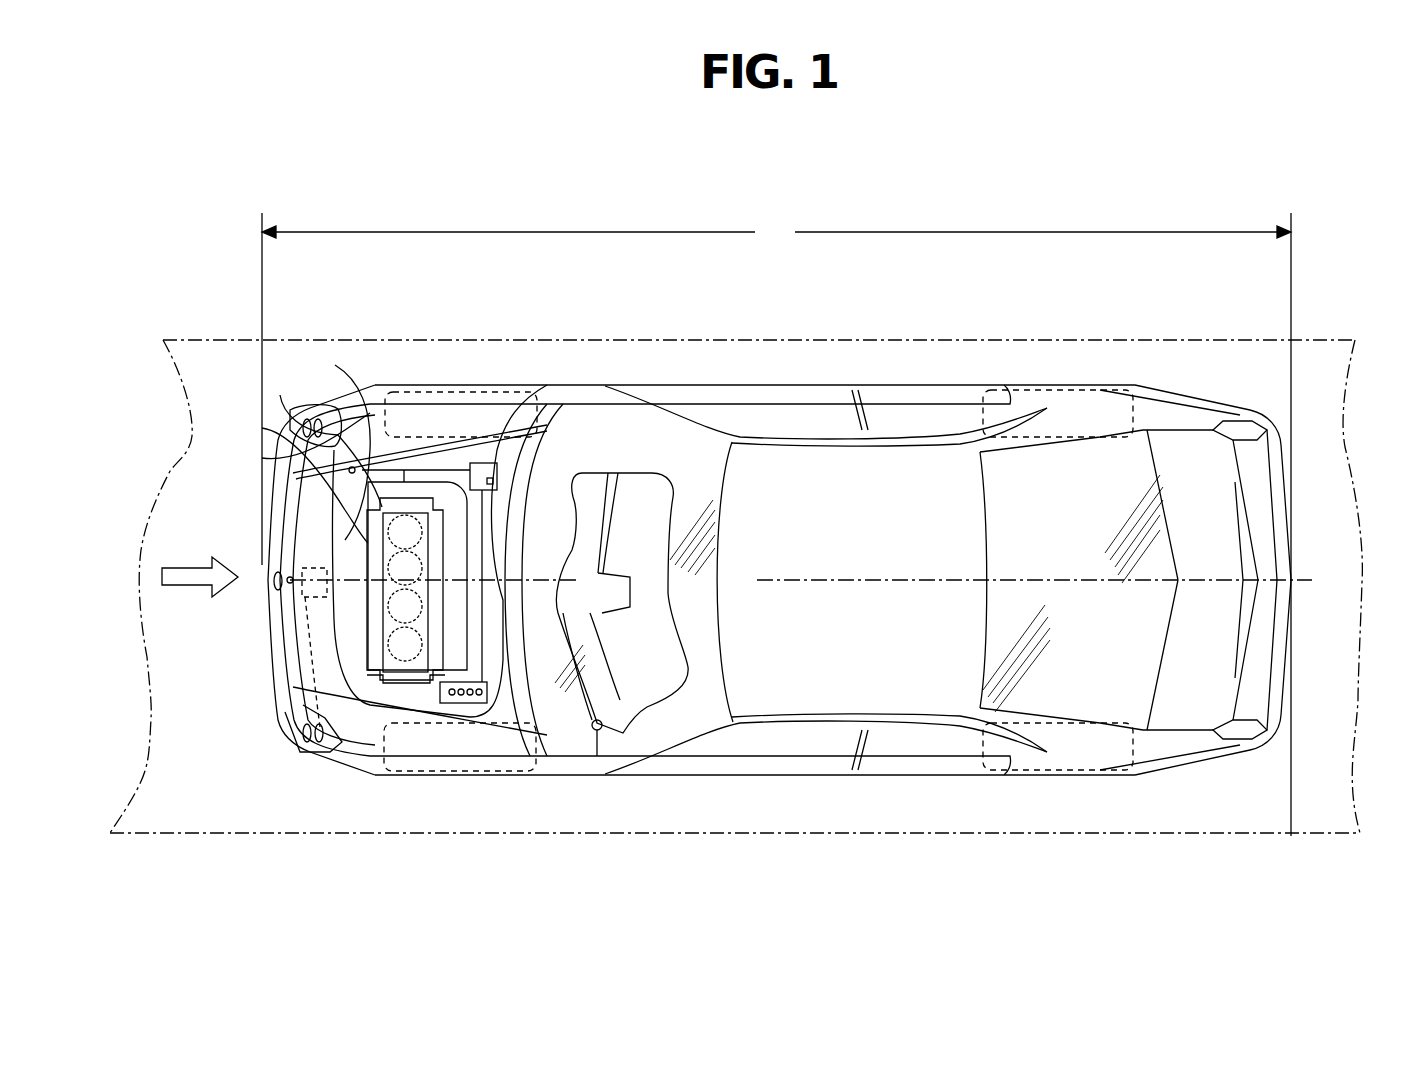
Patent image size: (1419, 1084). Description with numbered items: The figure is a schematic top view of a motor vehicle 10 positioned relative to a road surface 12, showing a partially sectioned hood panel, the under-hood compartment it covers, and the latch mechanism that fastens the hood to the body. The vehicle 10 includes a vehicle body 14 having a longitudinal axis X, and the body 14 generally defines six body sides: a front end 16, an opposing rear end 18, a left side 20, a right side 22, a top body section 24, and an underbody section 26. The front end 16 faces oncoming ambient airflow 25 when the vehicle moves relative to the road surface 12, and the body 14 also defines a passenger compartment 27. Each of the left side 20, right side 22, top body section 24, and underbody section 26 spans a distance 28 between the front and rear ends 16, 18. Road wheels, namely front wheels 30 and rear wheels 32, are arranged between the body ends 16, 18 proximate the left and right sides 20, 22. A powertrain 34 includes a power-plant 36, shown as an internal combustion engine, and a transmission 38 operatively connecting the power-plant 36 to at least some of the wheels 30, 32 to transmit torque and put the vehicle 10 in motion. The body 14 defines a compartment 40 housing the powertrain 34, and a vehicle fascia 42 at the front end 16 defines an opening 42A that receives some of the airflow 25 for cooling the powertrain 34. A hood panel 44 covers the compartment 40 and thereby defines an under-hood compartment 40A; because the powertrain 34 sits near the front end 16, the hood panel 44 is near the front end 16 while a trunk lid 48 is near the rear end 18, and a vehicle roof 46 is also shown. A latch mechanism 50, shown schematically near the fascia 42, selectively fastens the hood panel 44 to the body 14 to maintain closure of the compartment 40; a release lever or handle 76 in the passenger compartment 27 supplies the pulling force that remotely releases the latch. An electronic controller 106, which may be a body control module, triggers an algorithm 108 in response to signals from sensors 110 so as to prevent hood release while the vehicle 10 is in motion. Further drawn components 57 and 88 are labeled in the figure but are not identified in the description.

The motor vehicle 10 is at (238, 861).
The road surface 12 is at (220, 340).
The vehicle body 14 is at (900, 480).
The front end 16 is at (268, 522).
The rear end 18 is at (1291, 535).
The left side 20 is at (770, 777).
The right side 22 is at (708, 388).
The top body section 24 is at (852, 582).
The ambient airflow 25 is at (200, 568).
The underbody section 26 is at (918, 392).
The passenger compartment 27 is at (628, 648).
The distance 28 is at (776, 524).
The front wheels 30 is at (467, 390).
The rear wheels 32 is at (1133, 407).
The powertrain 34 is at (365, 630).
The power-plant 36 is at (296, 442).
The transmission 38 is at (299, 480).
The compartment 40 is at (403, 697).
The under-hood compartment 40A is at (380, 745).
The vehicle fascia 42 is at (277, 625).
The opening 42A is at (277, 597).
The hood panel 44 is at (298, 738).
The vehicle roof 46 is at (958, 558).
The trunk lid 48 is at (1193, 466).
The latch mechanism 50 is at (290, 670).
The grille 57 is at (272, 565).
The release lever or handle 76 is at (550, 867).
The dash panel 88 is at (592, 492).
The electronic controller 106 is at (483, 462).
The algorithm 108 is at (490, 490).
The sensors 110 is at (322, 437).
The longitudinal axis X is at (1299, 587).